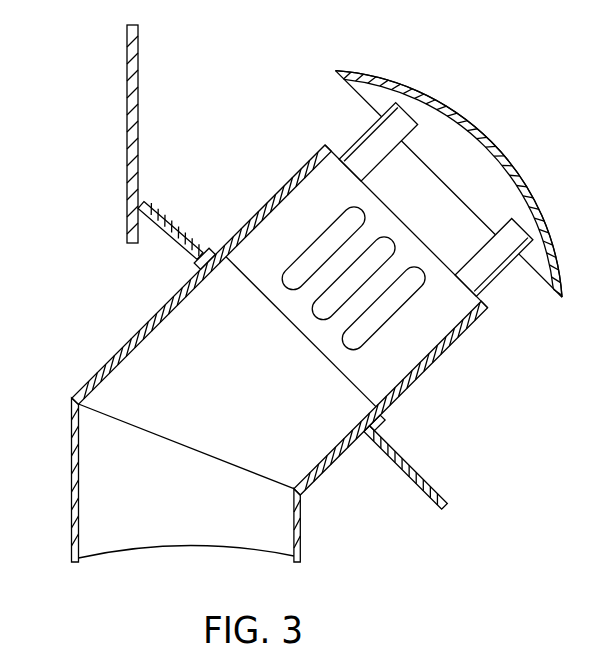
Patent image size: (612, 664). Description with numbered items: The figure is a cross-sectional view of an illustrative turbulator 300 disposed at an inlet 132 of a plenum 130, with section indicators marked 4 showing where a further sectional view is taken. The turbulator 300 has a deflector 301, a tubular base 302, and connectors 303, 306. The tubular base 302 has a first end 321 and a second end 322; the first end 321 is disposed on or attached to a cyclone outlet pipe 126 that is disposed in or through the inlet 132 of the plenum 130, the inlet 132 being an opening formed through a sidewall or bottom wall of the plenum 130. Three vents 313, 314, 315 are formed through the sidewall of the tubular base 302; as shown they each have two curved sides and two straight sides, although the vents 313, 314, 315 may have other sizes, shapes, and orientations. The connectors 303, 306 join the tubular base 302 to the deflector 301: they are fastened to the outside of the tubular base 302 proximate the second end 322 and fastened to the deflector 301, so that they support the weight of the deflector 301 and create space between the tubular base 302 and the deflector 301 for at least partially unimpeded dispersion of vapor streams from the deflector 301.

The cyclone outlet pipe 126 is at (92, 470).
The plenum 130 is at (140, 60).
The inlet 132 is at (362, 458).
The turbulator 300 is at (484, 113).
The deflector 301 is at (493, 177).
The tubular base 302 is at (250, 222).
The connector 303 is at (495, 262).
The connector 306 is at (360, 152).
The vent 313 is at (286, 287).
The vent 314 is at (316, 318).
The vent 315 is at (348, 347).
The first end 321 is at (350, 383).
The second end 322 is at (423, 247).
The section line 4- 4 is at (288, 177).